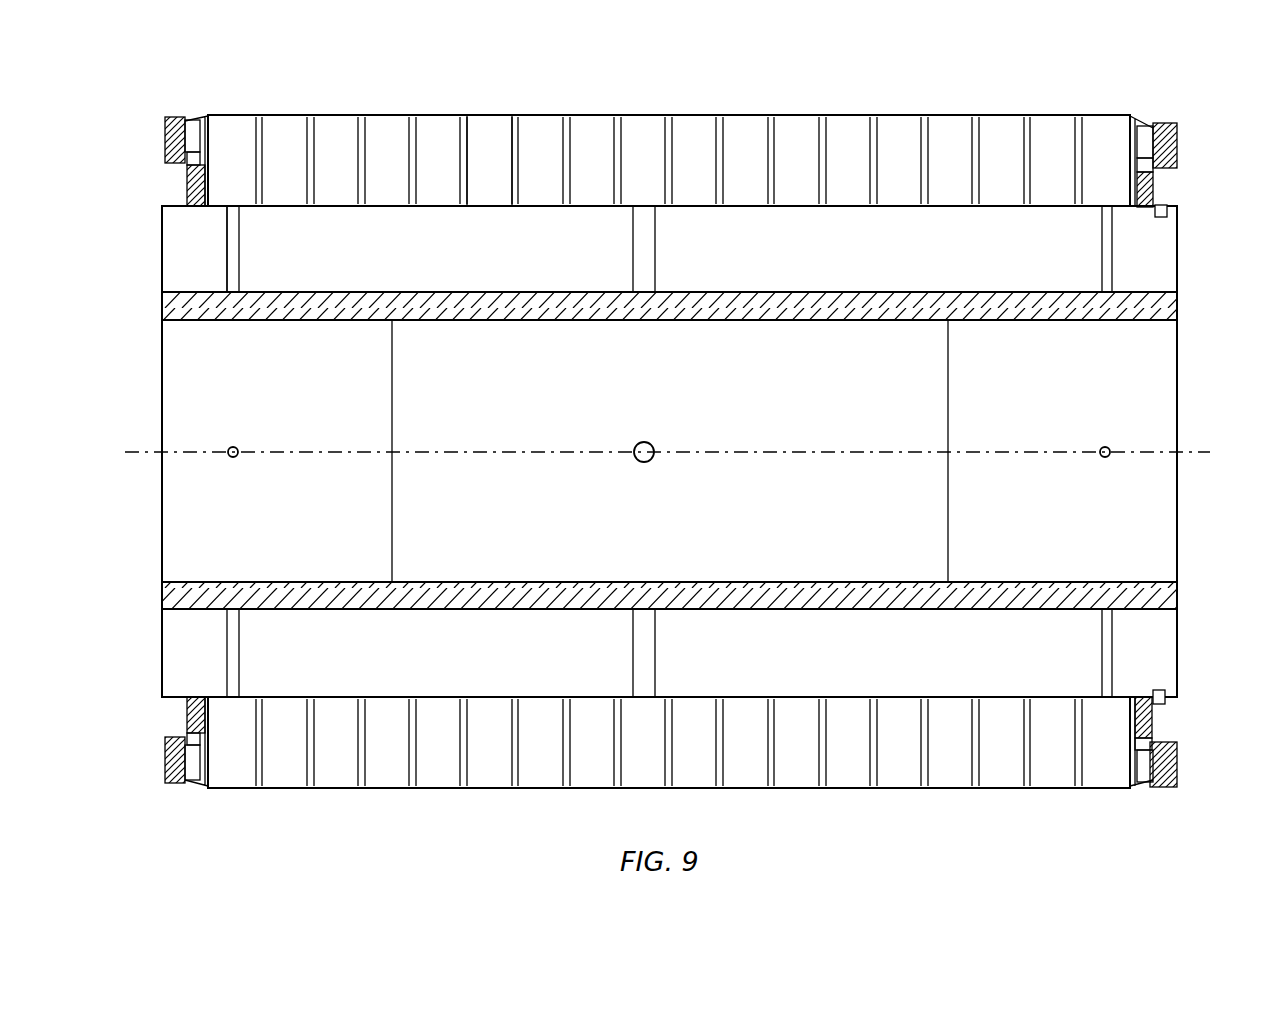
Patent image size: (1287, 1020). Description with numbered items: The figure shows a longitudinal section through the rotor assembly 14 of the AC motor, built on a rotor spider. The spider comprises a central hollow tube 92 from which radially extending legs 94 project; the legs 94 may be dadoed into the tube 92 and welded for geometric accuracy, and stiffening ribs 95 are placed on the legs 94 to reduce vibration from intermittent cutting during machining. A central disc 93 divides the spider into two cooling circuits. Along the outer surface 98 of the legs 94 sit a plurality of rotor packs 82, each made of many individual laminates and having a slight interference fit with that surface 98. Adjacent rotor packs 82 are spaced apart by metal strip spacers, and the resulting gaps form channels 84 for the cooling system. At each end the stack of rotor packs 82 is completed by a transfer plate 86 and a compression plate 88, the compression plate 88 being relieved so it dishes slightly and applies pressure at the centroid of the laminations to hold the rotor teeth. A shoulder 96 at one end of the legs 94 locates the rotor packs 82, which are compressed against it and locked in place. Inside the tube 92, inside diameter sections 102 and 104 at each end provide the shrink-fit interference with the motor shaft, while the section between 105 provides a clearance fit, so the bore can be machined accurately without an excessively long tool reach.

The rotor assembly 14 is at (895, 70).
The rotor pack 82 is at (878, 815).
The channels 84 is at (465, 115).
The transfer plate 86 is at (205, 115).
The compression plate 88 is at (188, 185).
The central hollow tube 92 is at (162, 303).
The central disc 93 is at (657, 258).
The radially extending legs 94 is at (180, 253).
The stiffening ribs 95 is at (241, 258).
The shoulder 96 is at (1167, 211).
The outer surface of legs 98 is at (165, 205).
The inside diameter section 102 is at (312, 322).
The inside diameter section 104 is at (1025, 322).
The section between 105 is at (727, 322).